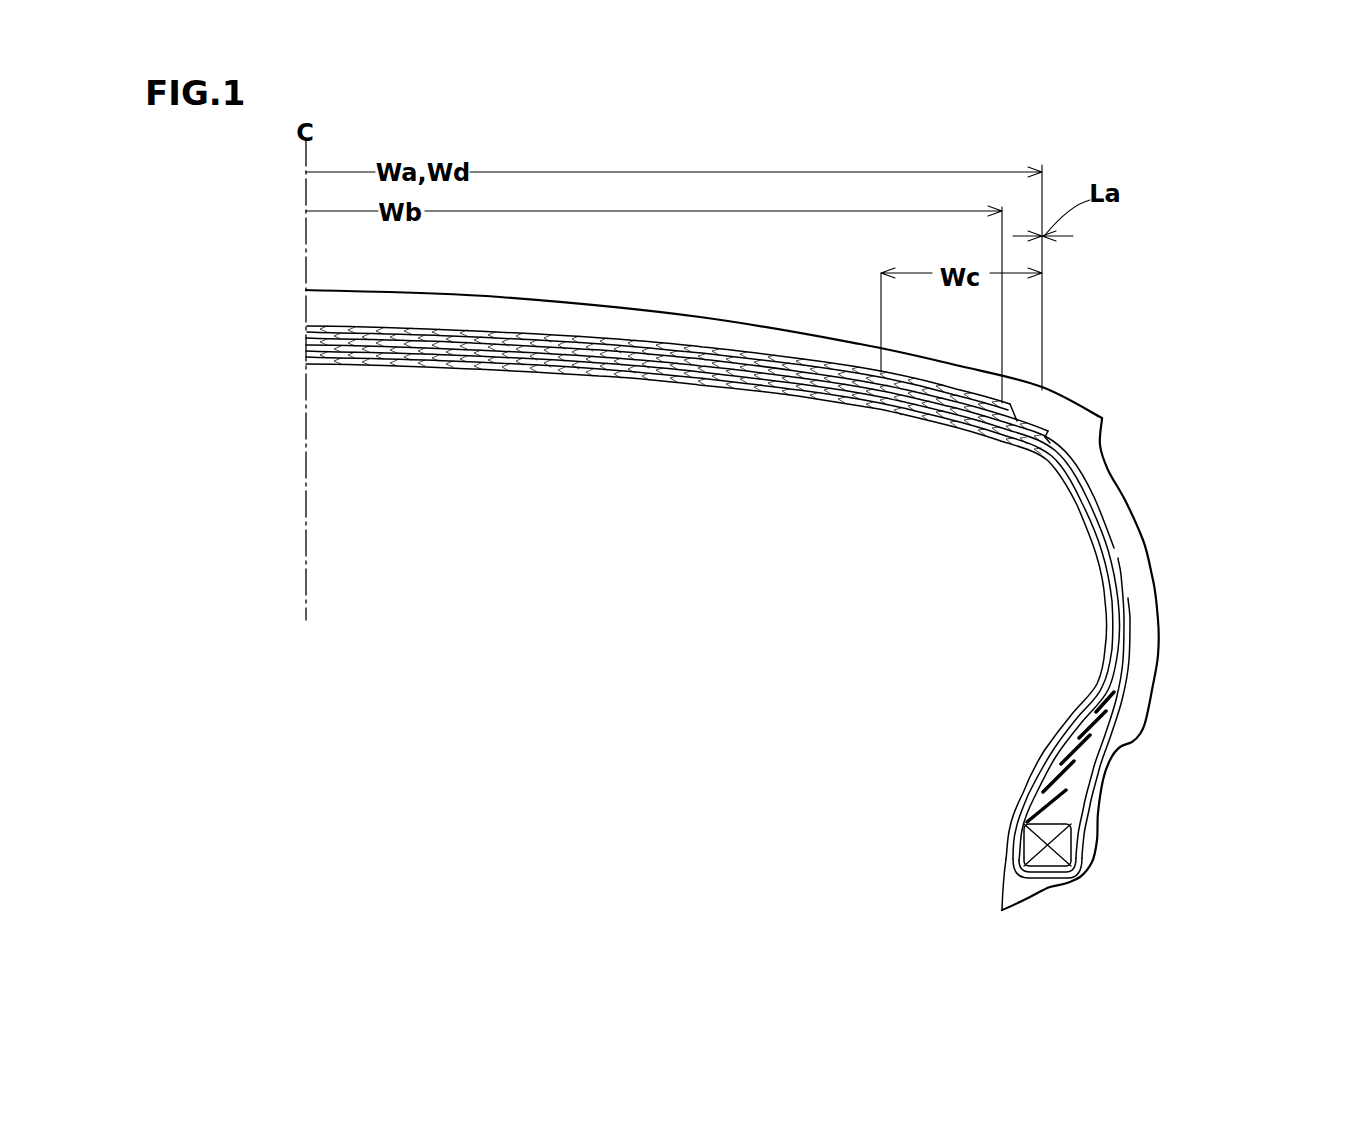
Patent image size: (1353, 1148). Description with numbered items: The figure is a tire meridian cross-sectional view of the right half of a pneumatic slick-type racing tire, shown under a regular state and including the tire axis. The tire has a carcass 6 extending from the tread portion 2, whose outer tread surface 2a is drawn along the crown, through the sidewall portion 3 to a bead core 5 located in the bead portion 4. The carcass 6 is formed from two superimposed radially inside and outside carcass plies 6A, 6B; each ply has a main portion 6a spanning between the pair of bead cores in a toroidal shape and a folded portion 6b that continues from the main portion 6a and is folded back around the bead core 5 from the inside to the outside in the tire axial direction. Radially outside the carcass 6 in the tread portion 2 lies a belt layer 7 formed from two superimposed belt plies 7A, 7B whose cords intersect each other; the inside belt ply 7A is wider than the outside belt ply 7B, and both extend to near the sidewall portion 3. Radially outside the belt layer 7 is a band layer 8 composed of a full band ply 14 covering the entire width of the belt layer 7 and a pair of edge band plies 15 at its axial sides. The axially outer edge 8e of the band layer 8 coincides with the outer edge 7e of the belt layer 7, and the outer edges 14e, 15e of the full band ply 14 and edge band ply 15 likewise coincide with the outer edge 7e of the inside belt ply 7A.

The tread portion 2 is at (1058, 384).
The tread surface 2a is at (507, 308).
The sidewall portion 3 is at (1174, 667).
The bead portion 4 is at (1147, 803).
The bead core 5 is at (1057, 843).
The carcass 6 is at (779, 605).
The inside carcass ply 6A is at (560, 360).
The outside carcass ply 6B is at (617, 360).
The main portion 6a is at (1100, 663).
The folded portion 6b is at (1130, 595).
The belt layer 7 is at (768, 425).
The inside belt ply 7A is at (373, 338).
The outside belt ply 7B is at (440, 330).
The outer edge of the belt layer 7e is at (1057, 455).
The band layer 8 is at (771, 428).
The full band ply 14 is at (753, 380).
The edge band ply 15 is at (932, 382).
The outer edge of the full band ply 14e is at (1053, 440).
The outer edge of the edge band ply 15e is at (1045, 430).
The outer edge of the band layer 8e is at (1118, 305).